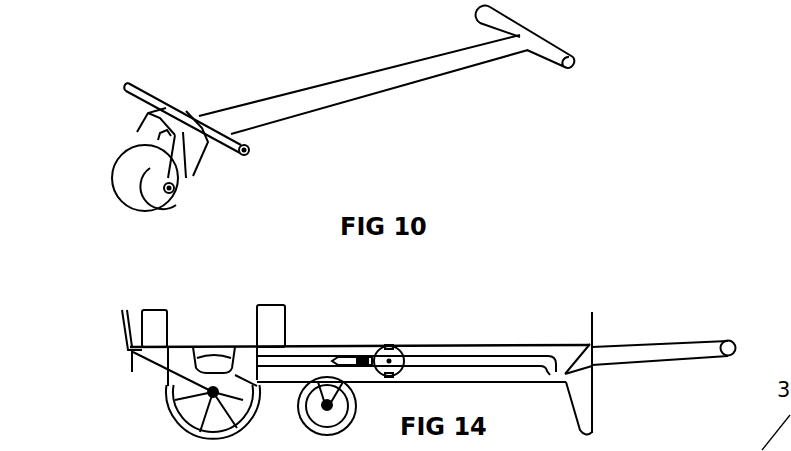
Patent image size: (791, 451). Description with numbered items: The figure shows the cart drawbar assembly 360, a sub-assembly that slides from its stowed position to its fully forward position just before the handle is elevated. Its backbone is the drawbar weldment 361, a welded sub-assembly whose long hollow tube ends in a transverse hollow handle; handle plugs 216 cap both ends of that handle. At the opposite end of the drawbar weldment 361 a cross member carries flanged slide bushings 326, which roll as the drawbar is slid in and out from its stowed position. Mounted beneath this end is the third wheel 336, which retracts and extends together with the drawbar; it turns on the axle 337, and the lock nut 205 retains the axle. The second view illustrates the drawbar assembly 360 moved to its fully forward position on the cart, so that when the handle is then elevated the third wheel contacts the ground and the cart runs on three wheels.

In FIG. 10, the drawbar weldment 361 is at (403, 90).
In FIG. 10, the flanged bushings 326 is at (252, 150).
In FIG. 10, the handle plugs 216 is at (562, 70).
In FIG. 10, the third wheel 336 is at (111, 192).
In FIG. 10, the axle 337 is at (177, 188).
In FIG. 10, the lock nut 205 is at (166, 202).
In FIG. 14, the drawbar assembly 360 is at (642, 340).